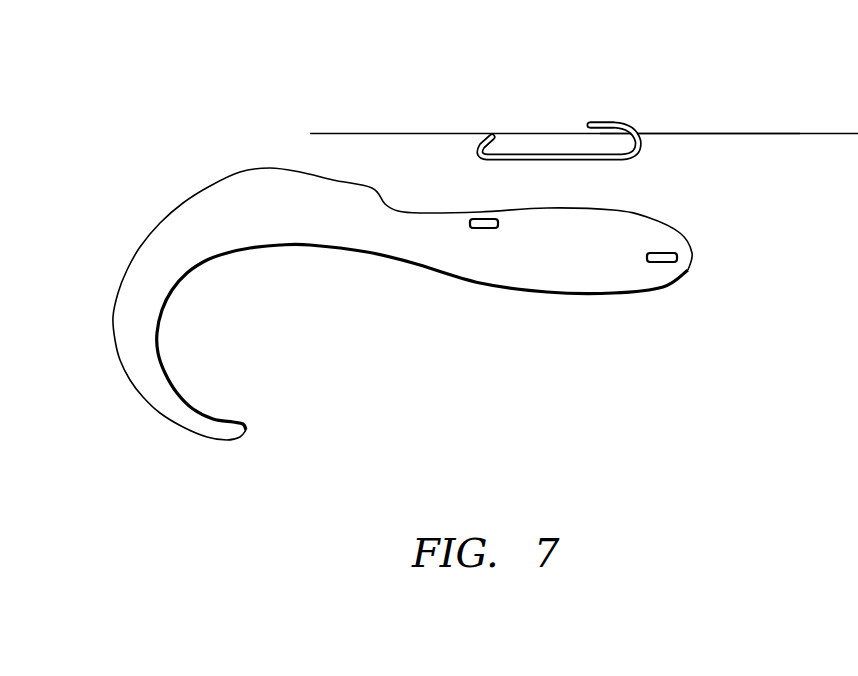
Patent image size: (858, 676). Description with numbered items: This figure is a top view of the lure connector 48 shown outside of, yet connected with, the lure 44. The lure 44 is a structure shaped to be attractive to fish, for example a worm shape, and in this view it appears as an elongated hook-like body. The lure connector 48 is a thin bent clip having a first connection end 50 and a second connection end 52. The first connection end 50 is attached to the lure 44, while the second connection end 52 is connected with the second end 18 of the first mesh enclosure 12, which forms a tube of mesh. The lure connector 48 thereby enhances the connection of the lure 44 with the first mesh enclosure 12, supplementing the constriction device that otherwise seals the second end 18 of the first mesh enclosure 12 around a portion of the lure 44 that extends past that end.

The first mesh enclosure 12 is at (805, 132).
The second end 18 is at (688, 132).
The lure 44 is at (272, 248).
The lure connector 48 is at (632, 164).
The first connection end 50 is at (478, 219).
The second connection end 52 is at (672, 263).